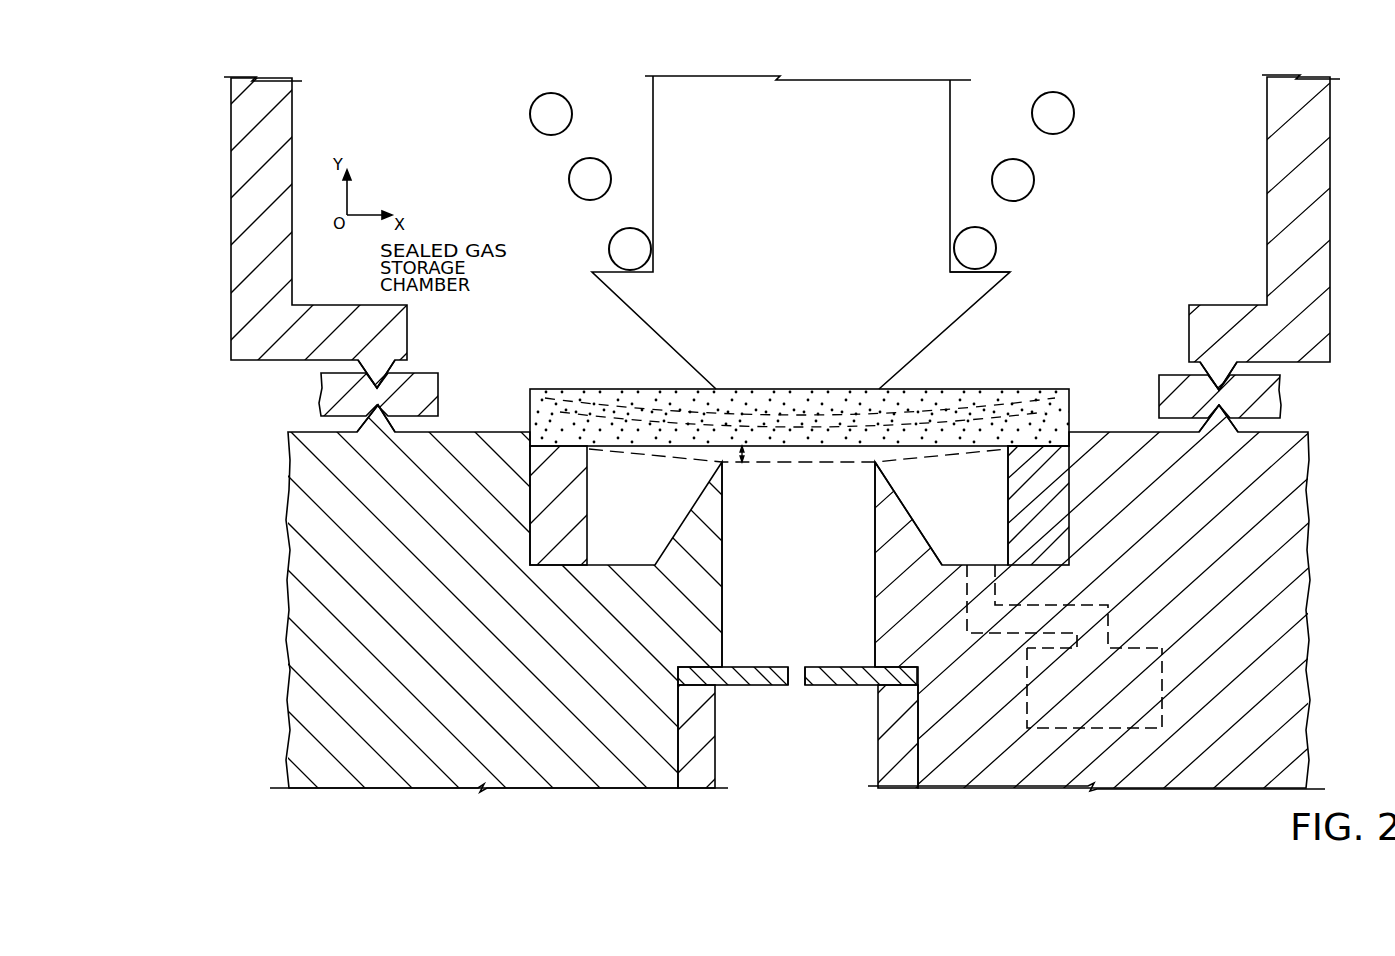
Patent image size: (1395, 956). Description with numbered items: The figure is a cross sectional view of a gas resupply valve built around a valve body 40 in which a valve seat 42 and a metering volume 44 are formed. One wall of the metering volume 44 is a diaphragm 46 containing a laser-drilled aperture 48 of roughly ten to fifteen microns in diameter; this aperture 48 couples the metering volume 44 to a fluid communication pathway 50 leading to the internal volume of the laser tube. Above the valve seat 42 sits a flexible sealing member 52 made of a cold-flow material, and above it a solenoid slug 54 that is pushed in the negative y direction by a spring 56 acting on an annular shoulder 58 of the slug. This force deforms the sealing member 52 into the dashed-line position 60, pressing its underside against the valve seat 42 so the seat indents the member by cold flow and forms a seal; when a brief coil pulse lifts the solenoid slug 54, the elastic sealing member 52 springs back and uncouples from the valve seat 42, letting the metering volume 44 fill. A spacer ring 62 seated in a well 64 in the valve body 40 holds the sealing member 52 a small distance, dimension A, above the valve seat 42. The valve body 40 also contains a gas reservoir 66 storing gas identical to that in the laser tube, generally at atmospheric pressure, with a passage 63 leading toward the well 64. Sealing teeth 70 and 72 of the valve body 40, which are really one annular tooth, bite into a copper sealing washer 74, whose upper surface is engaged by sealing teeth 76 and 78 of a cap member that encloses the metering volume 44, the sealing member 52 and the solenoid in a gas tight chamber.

The valve body 40 is at (451, 619).
The valve seat 42 is at (873, 463).
The metering volume 44 is at (804, 577).
The diaphragm 46 is at (846, 607).
The aperture 48 is at (796, 684).
The fluid communication pathway 50 is at (800, 786).
The sealing member 52 is at (590, 388).
The solenoid slug 54 is at (799, 277).
The spring 56 is at (996, 249).
The annular shoulder 58 is at (1003, 272).
The deformed position of sealing member 60 is at (913, 460).
The spacer ring 62 is at (585, 498).
The passage 63 is at (1046, 627).
The well 64 is at (975, 542).
The gas reservoir 66 is at (1096, 701).
The sealing tooth 70 is at (380, 418).
The sealing tooth 72 is at (1223, 428).
The copper sealing washer 74 is at (418, 385).
The sealing tooth of cap member 76 is at (377, 360).
The sealing tooth of cap member 78 is at (1218, 368).